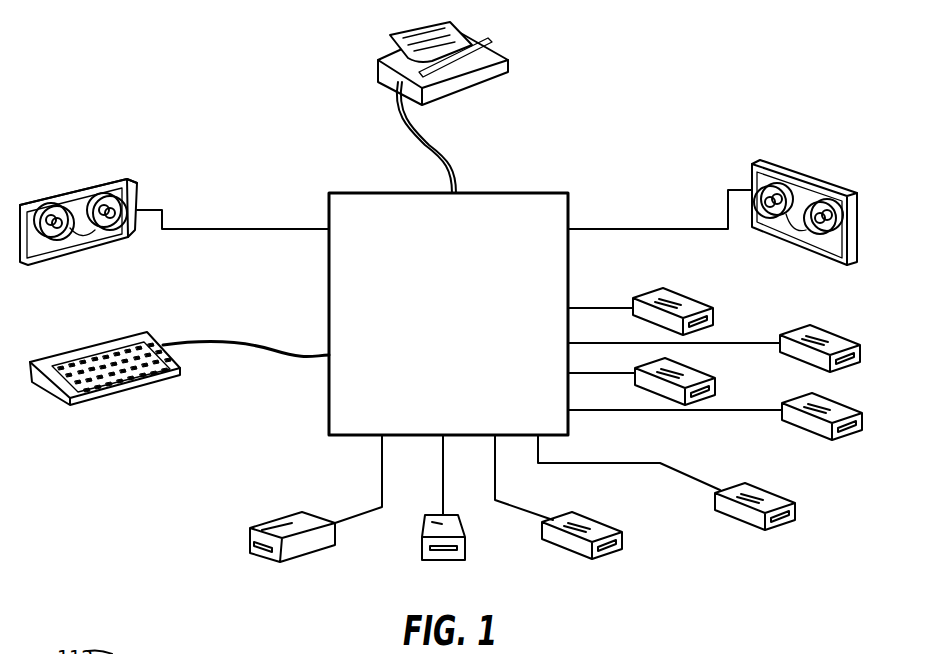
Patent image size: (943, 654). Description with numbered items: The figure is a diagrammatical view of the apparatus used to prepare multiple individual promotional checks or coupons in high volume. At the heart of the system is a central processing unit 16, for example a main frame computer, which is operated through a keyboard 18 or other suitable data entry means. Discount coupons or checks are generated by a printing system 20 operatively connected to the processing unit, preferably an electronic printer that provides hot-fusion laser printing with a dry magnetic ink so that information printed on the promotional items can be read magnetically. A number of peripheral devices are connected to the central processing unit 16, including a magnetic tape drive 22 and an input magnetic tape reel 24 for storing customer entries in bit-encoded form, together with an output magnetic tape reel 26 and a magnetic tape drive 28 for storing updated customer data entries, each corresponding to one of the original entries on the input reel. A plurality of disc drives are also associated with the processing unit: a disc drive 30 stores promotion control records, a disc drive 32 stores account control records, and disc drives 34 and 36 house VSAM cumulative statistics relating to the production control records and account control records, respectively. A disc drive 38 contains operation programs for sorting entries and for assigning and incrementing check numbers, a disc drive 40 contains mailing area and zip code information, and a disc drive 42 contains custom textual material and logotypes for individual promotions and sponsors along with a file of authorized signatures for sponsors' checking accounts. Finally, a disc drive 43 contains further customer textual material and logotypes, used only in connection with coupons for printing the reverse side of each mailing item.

The central processing unit 16 is at (538, 193).
The keyboard 18 is at (110, 390).
The printing system 20 is at (500, 50).
The magnetic tape drive 22 is at (90, 250).
The input magnetic tape reel 24 is at (91, 210).
The output magnetic tape reel 26 is at (811, 215).
The magnetic tape drive 28 is at (792, 238).
The disc drive 30 is at (675, 292).
The disc drive 32 is at (693, 375).
The disc drive 34 is at (838, 333).
The disc drive 36 is at (842, 407).
The disc drive 38 is at (278, 520).
The disc drive 40 is at (597, 512).
The disc drive 42 is at (467, 540).
The disc drive 43 is at (793, 510).